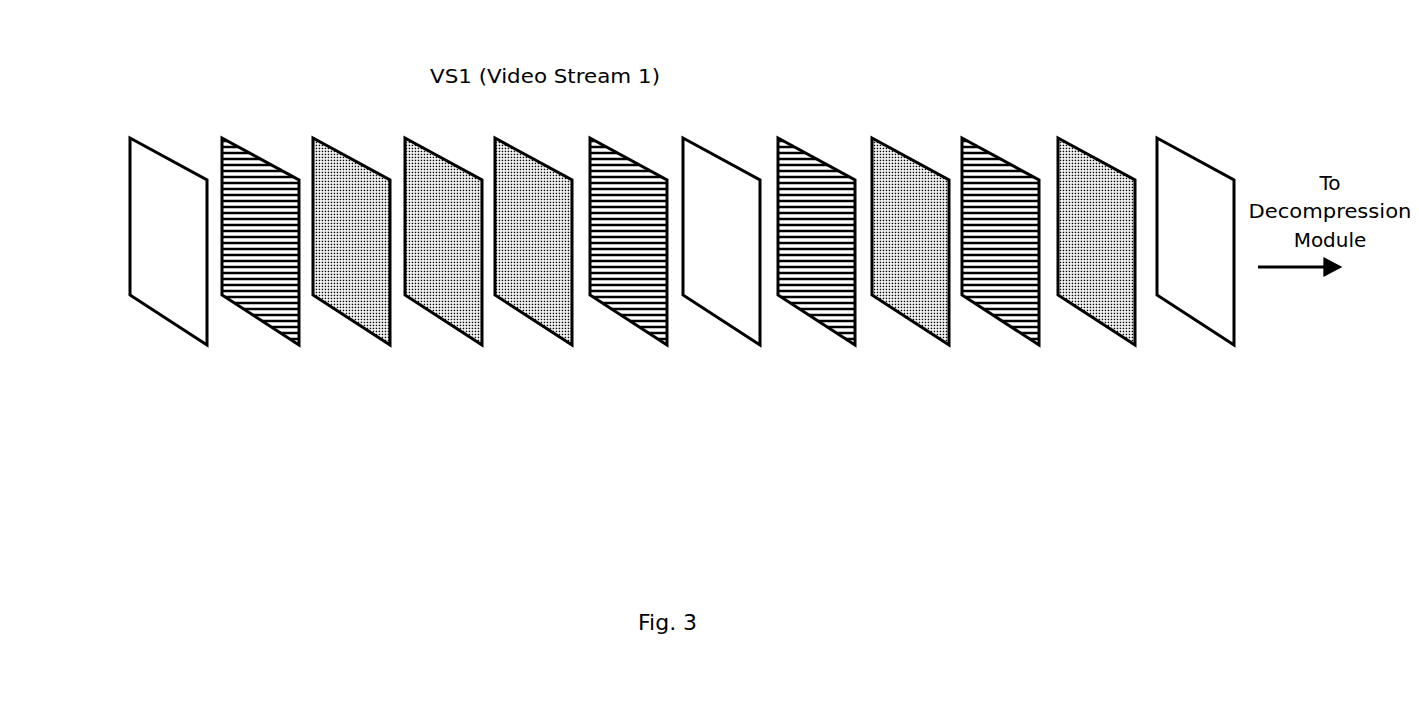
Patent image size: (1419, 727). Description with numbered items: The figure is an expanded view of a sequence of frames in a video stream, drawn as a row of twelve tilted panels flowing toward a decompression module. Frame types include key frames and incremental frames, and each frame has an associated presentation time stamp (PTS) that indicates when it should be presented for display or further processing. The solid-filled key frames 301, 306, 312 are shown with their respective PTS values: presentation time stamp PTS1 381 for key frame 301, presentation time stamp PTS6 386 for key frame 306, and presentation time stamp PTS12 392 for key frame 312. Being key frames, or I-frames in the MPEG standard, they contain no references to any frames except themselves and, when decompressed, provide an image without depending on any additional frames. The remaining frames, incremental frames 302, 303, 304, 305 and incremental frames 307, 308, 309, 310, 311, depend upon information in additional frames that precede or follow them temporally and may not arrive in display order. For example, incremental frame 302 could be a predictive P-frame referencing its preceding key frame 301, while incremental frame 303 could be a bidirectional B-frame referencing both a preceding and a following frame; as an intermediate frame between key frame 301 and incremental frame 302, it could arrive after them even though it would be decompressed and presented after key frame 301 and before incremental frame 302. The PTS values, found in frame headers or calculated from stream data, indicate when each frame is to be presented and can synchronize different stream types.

The key frame 301 is at (1205, 327).
The incremental frame 302 is at (1106, 327).
The incremental frame 303 is at (1010, 327).
The incremental frame 304 is at (920, 327).
The incremental frame 305 is at (826, 327).
The key frame 306 is at (731, 327).
The incremental frame 307 is at (638, 327).
The incremental frame 308 is at (543, 327).
The incremental frame 309 is at (453, 327).
The incremental frame 310 is at (361, 327).
The incremental frame 311 is at (270, 327).
The key frame 312 is at (178, 327).
The presentation time stamp PTS1 381 is at (1176, 118).
The presentation time stamp PTS6 386 is at (696, 118).
The presentation time stamp PTS12 392 is at (133, 118).